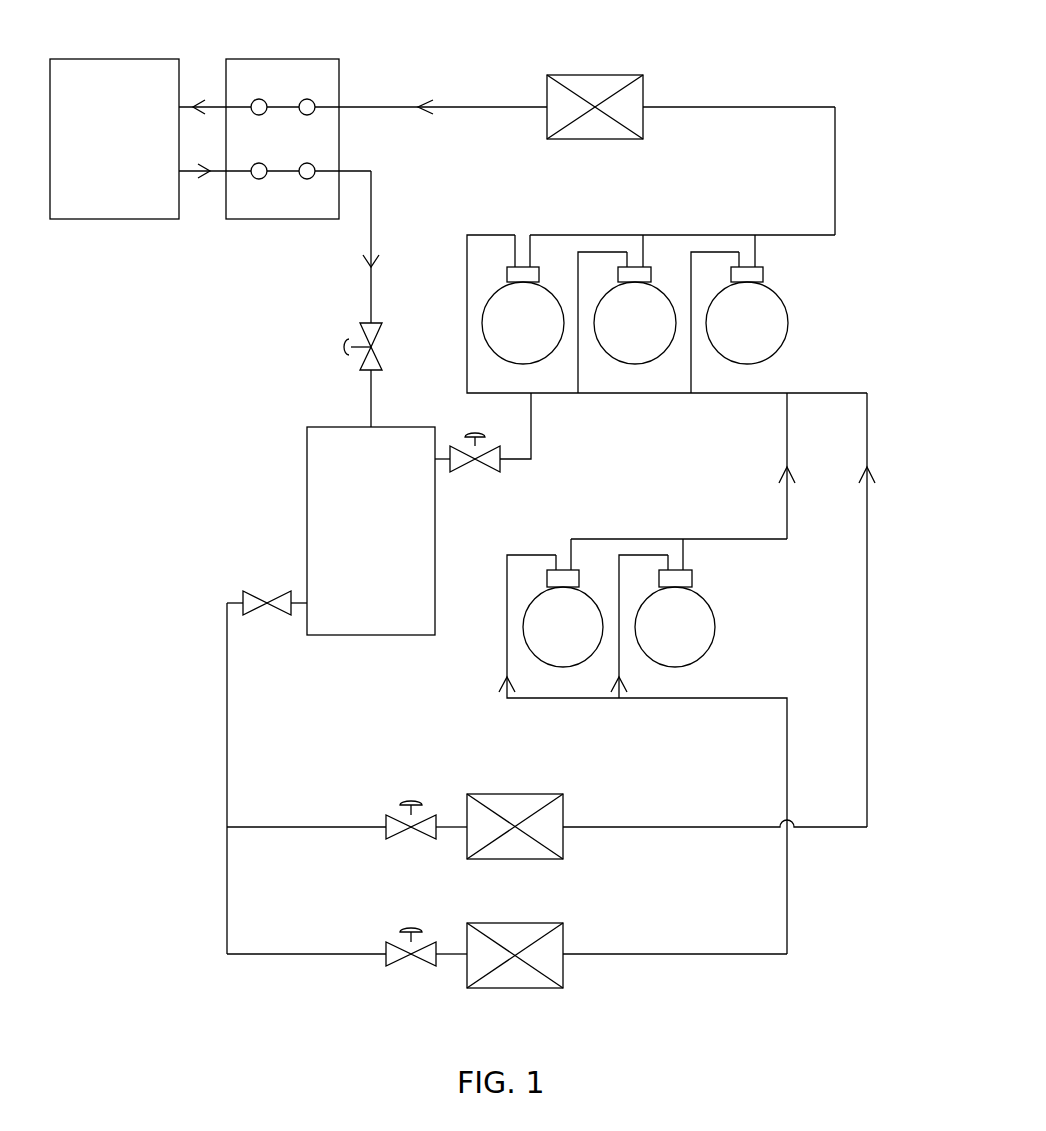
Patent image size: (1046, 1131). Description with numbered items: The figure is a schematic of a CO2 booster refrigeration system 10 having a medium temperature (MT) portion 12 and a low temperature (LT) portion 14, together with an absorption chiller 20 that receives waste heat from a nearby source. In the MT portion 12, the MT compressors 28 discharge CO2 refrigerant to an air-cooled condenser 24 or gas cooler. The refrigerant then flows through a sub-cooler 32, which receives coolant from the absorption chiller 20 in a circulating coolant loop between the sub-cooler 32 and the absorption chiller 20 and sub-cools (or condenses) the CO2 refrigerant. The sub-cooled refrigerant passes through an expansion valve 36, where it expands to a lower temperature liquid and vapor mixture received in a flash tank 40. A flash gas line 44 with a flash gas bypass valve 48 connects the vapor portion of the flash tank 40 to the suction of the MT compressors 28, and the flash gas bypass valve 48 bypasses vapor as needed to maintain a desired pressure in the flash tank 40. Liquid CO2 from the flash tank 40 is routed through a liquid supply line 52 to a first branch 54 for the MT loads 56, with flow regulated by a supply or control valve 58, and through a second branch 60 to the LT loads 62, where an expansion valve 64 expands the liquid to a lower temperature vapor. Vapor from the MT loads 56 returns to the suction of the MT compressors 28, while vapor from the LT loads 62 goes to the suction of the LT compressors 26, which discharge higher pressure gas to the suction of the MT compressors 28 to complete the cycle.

The CO2 booster refrigeration system 10 is at (793, 17).
The medium temperature (MT) portion 12 is at (680, 314).
The low temperature (LT) portion 14 is at (388, 678).
The absorption chiller 20 is at (145, 219).
The air-cooled condenser 24 is at (609, 139).
The LT compressors 26 is at (713, 642).
The MT compressors 28 is at (785, 338).
The sub-cooler 32 is at (310, 219).
The expansion valve 36 is at (358, 330).
The flash tank 40 is at (307, 451).
The flash gas line 44 is at (531, 420).
The flash gas bypass valve 48 is at (485, 472).
The liquid supply line 52 is at (227, 673).
The first branch 54 is at (296, 827).
The MT loads 56 is at (565, 802).
The supply or control valve 58 is at (417, 840).
The low temperature liquid line 60 is at (296, 954).
The LT loads 62 is at (565, 929).
The expansion valve 64 is at (417, 967).